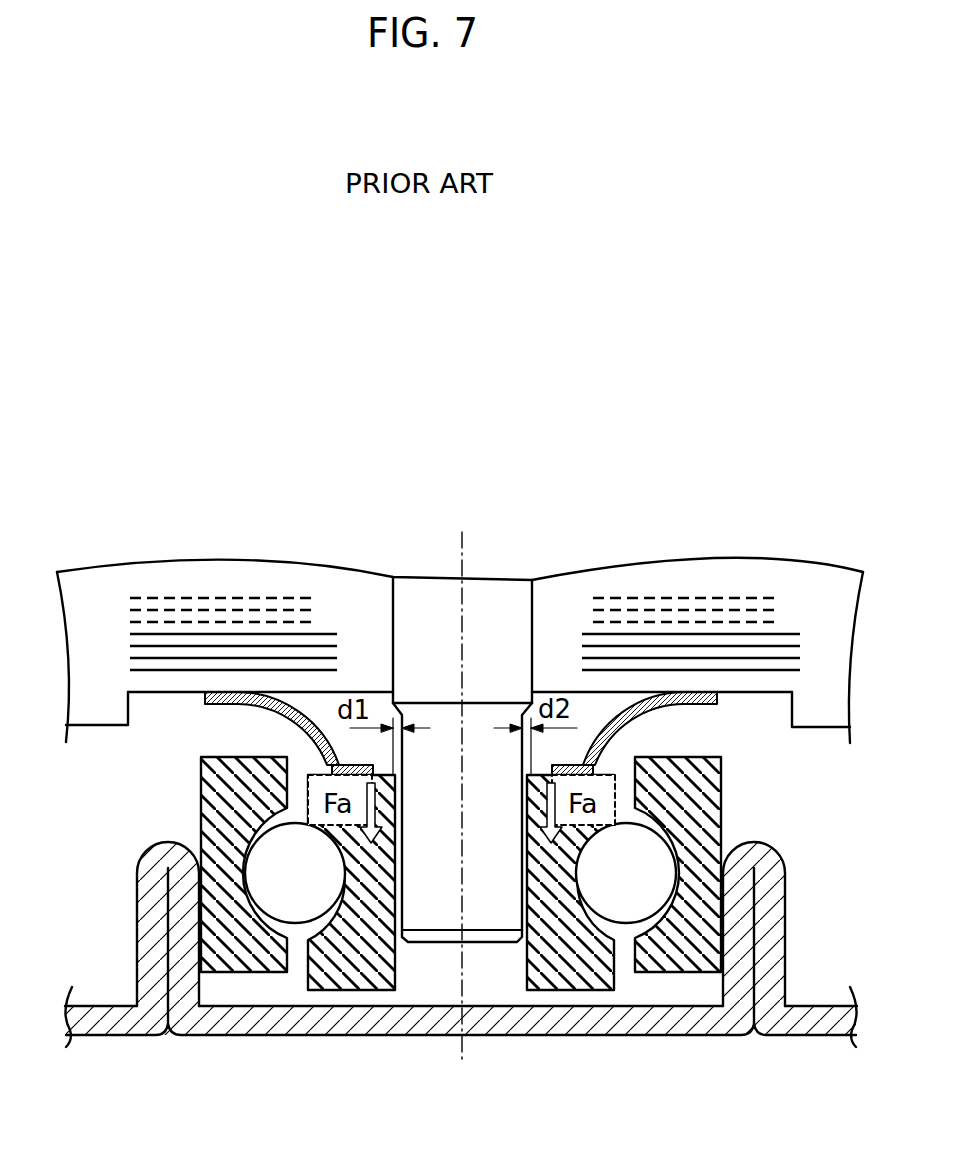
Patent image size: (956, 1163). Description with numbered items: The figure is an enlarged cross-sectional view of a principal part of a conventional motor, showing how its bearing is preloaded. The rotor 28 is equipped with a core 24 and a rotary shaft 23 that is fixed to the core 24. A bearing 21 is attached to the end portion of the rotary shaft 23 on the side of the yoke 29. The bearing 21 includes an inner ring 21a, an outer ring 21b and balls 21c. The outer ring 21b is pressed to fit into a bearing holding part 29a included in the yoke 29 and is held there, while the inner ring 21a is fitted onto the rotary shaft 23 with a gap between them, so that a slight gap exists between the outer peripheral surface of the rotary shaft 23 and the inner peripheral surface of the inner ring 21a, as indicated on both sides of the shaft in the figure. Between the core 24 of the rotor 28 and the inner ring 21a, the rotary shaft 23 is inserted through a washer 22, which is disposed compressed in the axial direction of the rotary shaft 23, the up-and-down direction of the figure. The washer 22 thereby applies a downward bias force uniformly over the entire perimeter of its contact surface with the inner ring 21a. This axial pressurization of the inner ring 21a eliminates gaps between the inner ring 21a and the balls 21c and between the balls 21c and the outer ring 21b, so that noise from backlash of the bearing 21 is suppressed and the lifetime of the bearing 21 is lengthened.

The rotor 28 is at (138, 580).
The core 24 is at (102, 728).
The washer 22 is at (643, 725).
The bearing 21 is at (384, 935).
The inner ring 21a is at (373, 983).
The outer ring 21b is at (252, 930).
The balls 21c is at (312, 903).
The rotary shaft 23 is at (488, 943).
The yoke 29 is at (460, 978).
The bearing holding part 29a is at (143, 985).